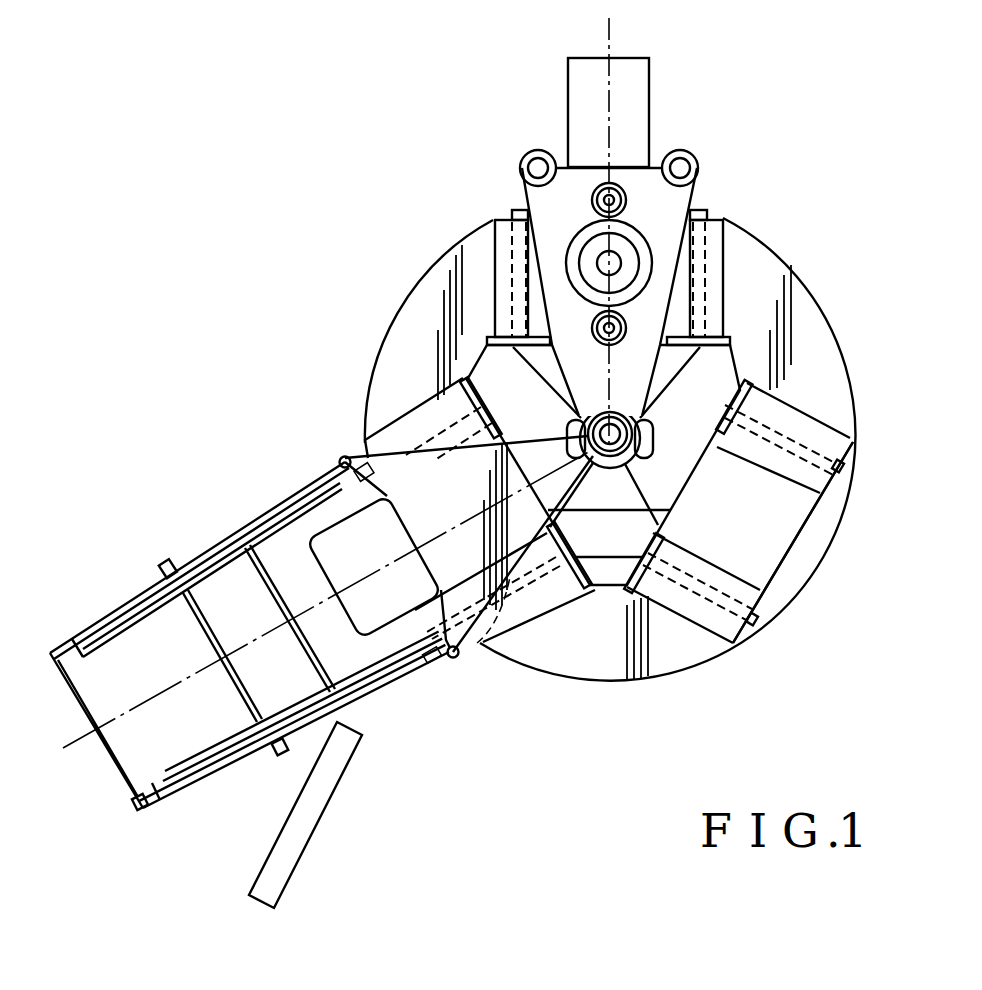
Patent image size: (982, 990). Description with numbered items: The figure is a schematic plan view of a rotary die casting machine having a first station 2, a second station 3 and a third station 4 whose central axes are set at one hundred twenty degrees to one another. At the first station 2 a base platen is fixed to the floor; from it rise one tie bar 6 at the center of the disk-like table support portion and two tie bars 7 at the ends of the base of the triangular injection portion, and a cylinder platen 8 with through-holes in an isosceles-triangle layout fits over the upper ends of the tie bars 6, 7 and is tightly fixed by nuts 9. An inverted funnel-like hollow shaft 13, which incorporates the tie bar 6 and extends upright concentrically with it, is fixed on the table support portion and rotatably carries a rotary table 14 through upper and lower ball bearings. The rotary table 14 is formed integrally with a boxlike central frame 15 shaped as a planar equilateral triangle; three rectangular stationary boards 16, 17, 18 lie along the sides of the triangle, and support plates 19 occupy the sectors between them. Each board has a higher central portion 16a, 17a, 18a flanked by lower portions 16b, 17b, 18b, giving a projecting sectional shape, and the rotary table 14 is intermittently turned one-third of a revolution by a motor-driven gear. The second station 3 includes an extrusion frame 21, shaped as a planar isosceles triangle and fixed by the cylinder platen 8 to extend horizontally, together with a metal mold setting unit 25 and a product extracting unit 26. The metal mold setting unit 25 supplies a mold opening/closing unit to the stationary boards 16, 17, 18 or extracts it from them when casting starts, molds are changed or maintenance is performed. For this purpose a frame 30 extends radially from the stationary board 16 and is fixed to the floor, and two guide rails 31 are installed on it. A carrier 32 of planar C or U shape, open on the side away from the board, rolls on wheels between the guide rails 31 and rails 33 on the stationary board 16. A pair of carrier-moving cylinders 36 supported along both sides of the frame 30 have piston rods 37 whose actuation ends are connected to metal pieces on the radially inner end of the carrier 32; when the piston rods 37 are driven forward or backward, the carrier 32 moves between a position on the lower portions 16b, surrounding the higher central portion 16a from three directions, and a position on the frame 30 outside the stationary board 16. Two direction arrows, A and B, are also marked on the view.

The first station 2 is at (692, 128).
The second station 3 is at (380, 333).
The third station 4 is at (803, 547).
The tie bar 6 is at (645, 452).
The tie bars 7 is at (524, 162).
The cylinder platen 8 is at (718, 232).
The nuts 9 is at (538, 150).
The hollow shaft 13 is at (654, 438).
The rotary table 14 is at (860, 342).
The central frame 15 is at (672, 510).
The stationary board 16 is at (417, 400).
The higher central portion 16a is at (576, 590).
The lower portions 16b is at (397, 418).
The stationary board 17 is at (486, 240).
The higher central portion 17a is at (692, 330).
The lower portions 17b is at (500, 250).
The stationary board 18 is at (822, 400).
The higher central portion 18a is at (773, 553).
The lower portions 18b is at (850, 443).
The support plates 19 is at (427, 272).
The extrusion frame 21 is at (348, 455).
The metal mold setting unit 25 is at (212, 535).
The product extracting unit 26 is at (320, 823).
The frame 30 is at (142, 592).
The guide rails 31 is at (100, 632).
The carrier 32 is at (290, 596).
The rails 33 is at (517, 211).
The carrier-moving cylinders 36 is at (255, 520).
The piston rods 37 is at (336, 462).
The direction A is at (742, 207).
The direction B is at (443, 776).